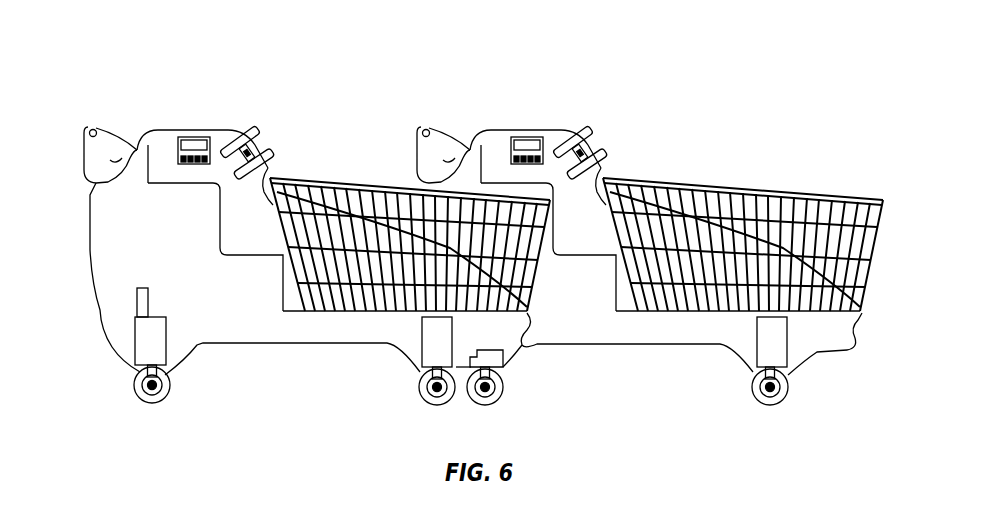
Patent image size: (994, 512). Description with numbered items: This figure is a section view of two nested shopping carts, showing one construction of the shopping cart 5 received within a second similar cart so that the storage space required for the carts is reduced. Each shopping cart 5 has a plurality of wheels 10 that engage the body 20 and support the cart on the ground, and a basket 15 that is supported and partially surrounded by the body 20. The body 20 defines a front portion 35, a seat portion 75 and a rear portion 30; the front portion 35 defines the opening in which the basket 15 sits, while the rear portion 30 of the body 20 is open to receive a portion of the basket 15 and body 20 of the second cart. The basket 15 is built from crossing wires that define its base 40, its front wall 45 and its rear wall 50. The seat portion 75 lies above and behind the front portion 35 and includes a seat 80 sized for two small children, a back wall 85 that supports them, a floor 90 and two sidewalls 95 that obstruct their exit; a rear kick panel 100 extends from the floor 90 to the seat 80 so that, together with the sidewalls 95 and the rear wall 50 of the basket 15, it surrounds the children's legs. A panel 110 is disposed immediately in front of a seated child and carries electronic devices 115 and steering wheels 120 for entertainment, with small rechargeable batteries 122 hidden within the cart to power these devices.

The shopping cart 5 is at (328, 103).
The wheels 10 is at (152, 403).
The basket 15 is at (368, 189).
The body 20 is at (137, 150).
The rear portion 30 is at (92, 197).
The front portion 35 is at (862, 345).
The base 40 is at (342, 313).
The front wall 45 is at (545, 255).
The rear wall 50 is at (270, 172).
The seat portion 75 is at (228, 125).
The seat 80 is at (192, 183).
The back wall 85 is at (150, 143).
The floor 90 is at (243, 232).
The sidewalls 95 is at (190, 138).
The rear kick panel 100 is at (228, 208).
The panel 110 is at (270, 147).
The electronic devices 115 is at (207, 137).
The steering wheels 120 is at (257, 128).
The rechargeable batteries 122 is at (147, 290).